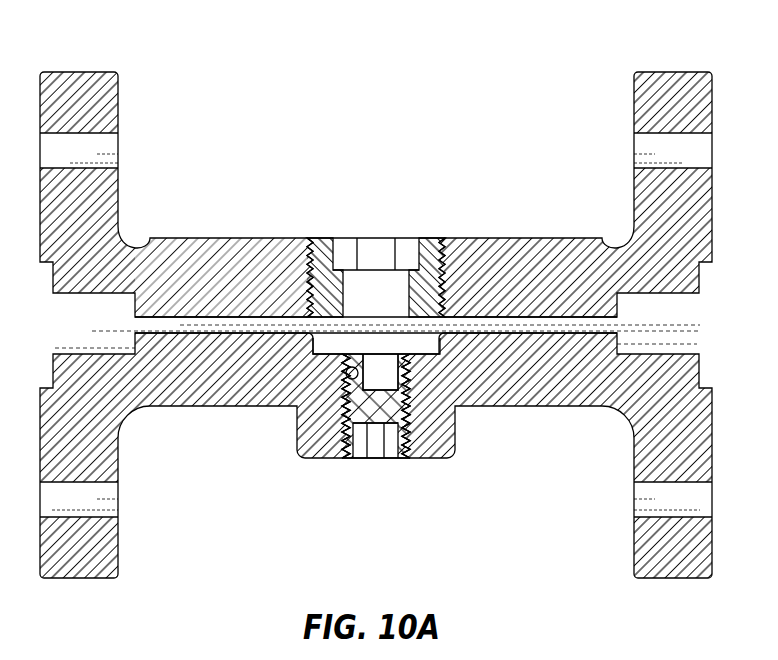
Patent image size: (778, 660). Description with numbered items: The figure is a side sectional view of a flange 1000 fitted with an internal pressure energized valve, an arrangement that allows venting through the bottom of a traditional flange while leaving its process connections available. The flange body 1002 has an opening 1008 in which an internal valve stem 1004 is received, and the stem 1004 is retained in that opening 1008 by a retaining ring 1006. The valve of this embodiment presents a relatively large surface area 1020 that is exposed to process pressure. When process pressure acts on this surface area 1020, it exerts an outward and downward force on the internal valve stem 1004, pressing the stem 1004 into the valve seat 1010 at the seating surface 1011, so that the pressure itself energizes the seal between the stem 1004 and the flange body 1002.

The flange 1000 is at (389, 330).
The flange body 1002 is at (389, 330).
The internal valve stem 1004 is at (429, 408).
The retaining ring 1006 is at (426, 238).
The opening 1008 is at (405, 412).
The valve seat 1010 is at (404, 374).
The seating surface 1011 is at (404, 374).
The surface area 1020 is at (346, 377).